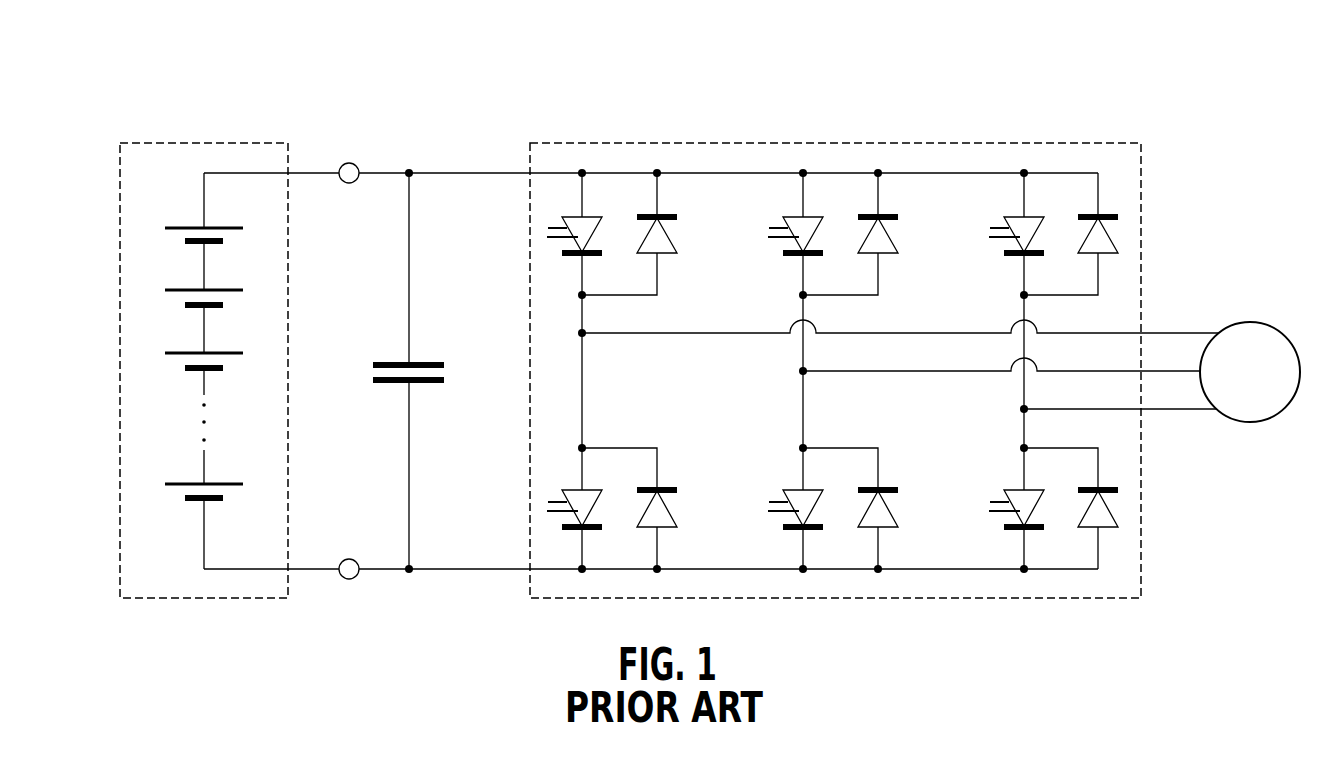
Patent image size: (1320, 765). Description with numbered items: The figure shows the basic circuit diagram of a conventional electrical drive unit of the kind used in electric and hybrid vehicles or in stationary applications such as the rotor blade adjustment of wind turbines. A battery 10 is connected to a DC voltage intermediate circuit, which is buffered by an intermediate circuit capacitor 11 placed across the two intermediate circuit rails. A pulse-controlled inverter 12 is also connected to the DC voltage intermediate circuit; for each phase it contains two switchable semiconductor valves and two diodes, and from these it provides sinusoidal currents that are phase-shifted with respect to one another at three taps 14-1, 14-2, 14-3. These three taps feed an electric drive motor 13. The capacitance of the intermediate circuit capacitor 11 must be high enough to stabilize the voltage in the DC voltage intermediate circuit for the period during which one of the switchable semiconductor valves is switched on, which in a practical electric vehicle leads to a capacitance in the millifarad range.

The battery 10 is at (163, 143).
The intermediate circuit capacitor 11 is at (420, 362).
The pulse-controlled inverter 12 is at (843, 143).
The electric drive motor 13 is at (1250, 322).
The tap 14-1 is at (582, 333).
The tap 14-2 is at (803, 371).
The tap 14-3 is at (1008, 409).